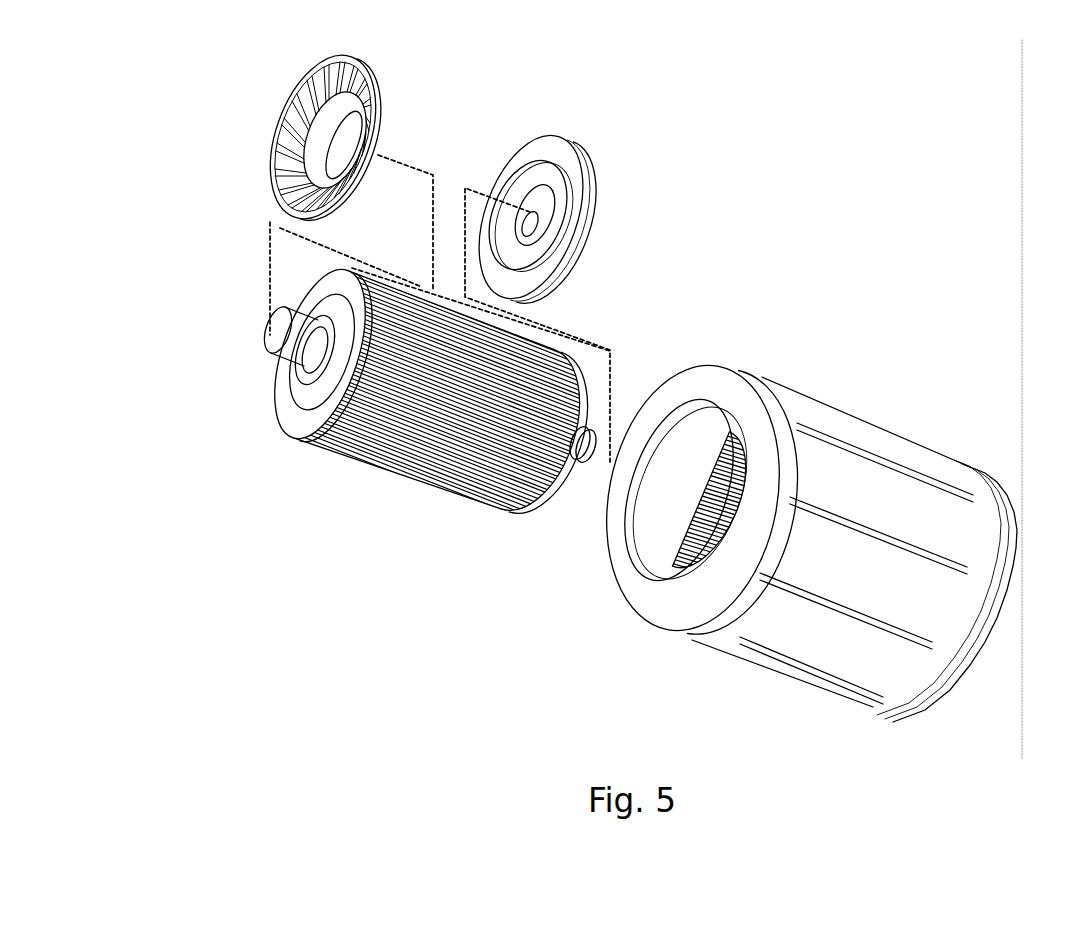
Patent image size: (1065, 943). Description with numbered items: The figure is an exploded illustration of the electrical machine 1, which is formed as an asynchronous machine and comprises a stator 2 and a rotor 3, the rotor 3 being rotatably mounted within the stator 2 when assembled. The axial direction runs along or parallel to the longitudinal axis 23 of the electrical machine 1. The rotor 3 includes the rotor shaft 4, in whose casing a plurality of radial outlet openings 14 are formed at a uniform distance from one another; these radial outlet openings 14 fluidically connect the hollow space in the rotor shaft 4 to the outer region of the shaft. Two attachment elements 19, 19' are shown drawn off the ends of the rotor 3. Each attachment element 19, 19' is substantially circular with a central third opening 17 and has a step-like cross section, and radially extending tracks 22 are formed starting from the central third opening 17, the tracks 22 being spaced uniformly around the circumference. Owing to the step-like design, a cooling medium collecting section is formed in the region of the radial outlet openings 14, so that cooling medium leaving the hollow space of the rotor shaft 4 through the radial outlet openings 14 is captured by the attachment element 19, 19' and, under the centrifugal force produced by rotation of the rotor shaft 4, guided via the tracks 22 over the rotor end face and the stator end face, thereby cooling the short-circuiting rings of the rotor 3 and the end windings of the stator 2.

The electrical machine 1 is at (897, 147).
The stator 2 is at (870, 400).
The rotor 3 is at (390, 480).
The rotor shaft 4 is at (295, 355).
The radial outlet opening 14 is at (332, 367).
The central third opening 17 is at (330, 158).
The attachment element 19 is at (282, 137).
The attachment element 19' is at (612, 217).
The tracks 22 is at (315, 108).
The longitudinal axis 23 is at (683, 492).